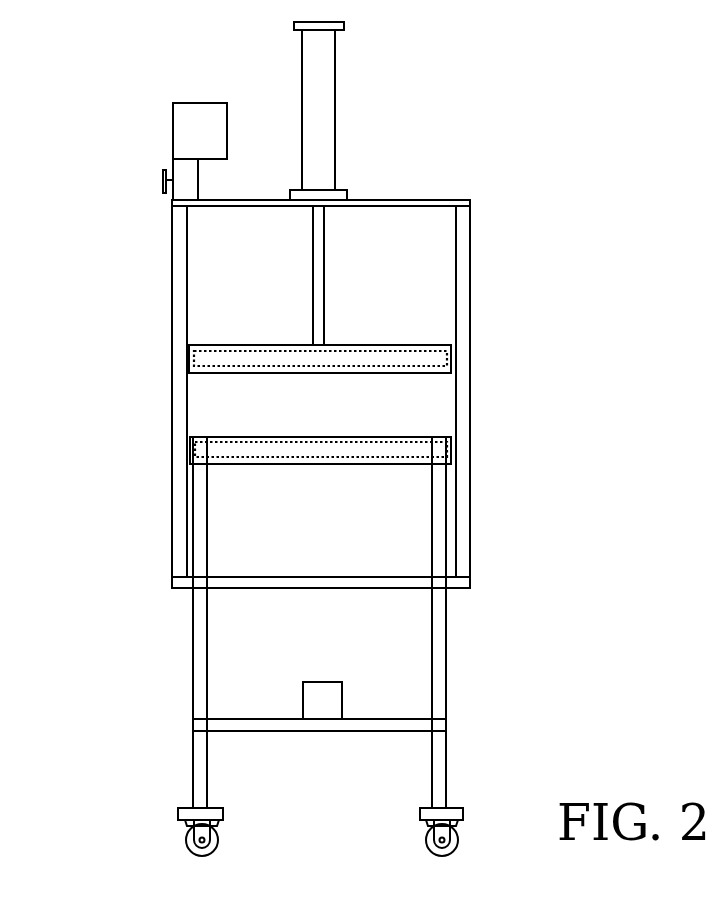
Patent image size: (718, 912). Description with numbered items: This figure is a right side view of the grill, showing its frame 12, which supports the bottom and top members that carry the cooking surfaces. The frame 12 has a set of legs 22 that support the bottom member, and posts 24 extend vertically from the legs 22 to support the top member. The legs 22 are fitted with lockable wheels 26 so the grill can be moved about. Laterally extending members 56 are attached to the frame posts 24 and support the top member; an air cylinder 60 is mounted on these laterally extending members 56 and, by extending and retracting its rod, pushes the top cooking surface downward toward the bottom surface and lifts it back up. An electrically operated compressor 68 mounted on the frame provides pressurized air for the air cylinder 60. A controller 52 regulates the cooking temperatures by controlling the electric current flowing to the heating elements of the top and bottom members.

The frame 12 is at (469, 634).
The legs 22 is at (167, 658).
The posts 24 is at (147, 390).
The lockable wheels 26 is at (164, 836).
The controller 52 is at (148, 129).
The laterally extending members 56 is at (432, 181).
The air cylinder 60 is at (360, 83).
The compressor 68 is at (334, 665).